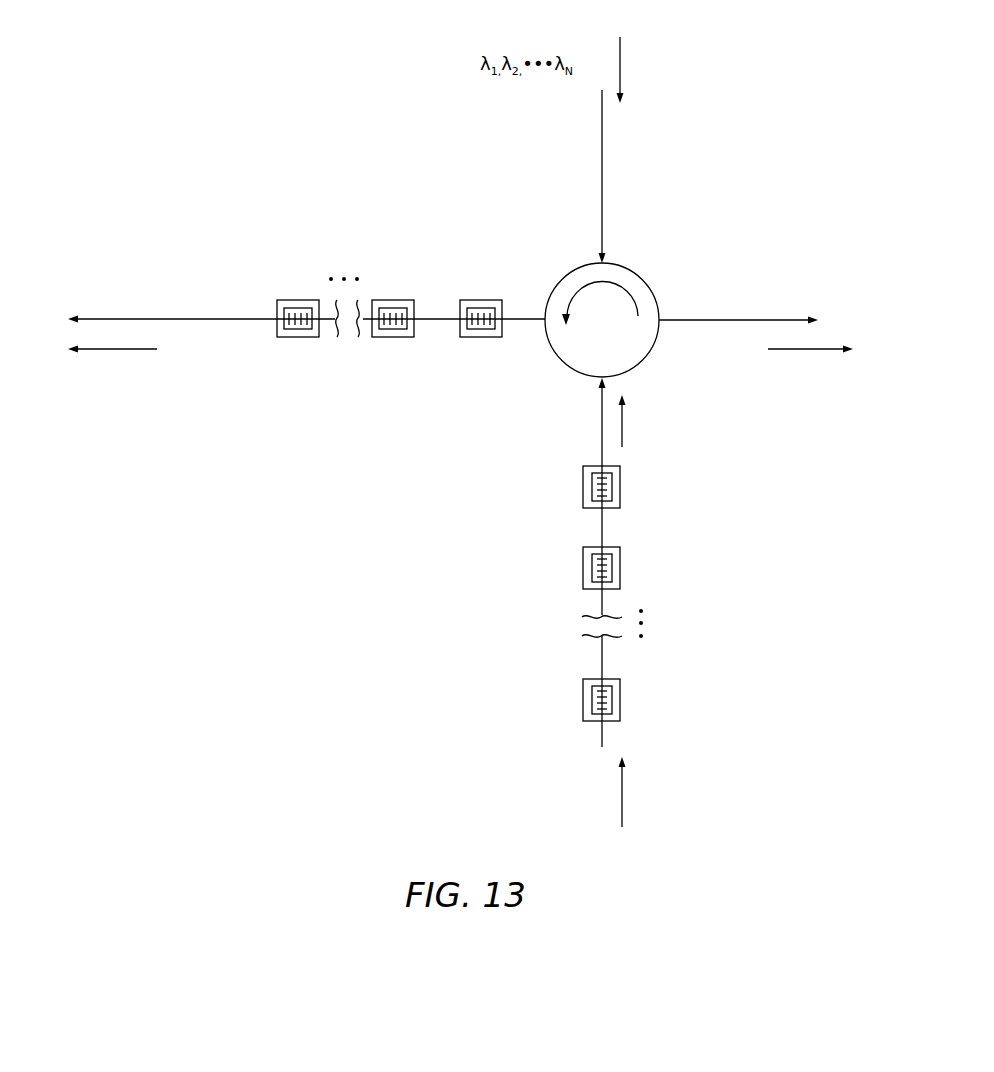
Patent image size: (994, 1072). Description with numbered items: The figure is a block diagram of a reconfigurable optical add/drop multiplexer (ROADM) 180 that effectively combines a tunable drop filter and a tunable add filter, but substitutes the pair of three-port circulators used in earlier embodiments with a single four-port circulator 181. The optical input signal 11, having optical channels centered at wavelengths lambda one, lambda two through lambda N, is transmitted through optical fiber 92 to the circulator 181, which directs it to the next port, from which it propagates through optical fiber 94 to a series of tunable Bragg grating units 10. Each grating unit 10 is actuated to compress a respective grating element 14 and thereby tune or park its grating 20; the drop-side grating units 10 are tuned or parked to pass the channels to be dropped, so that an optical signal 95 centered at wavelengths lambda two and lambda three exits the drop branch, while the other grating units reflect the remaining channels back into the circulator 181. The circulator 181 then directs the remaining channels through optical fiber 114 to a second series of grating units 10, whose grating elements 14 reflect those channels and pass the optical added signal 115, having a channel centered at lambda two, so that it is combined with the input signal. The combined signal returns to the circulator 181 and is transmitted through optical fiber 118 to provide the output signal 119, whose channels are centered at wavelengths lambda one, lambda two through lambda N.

The tunable Bragg grating unit 10 is at (298, 347).
The optical input signal 11 is at (622, 68).
The grating element 14 is at (284, 312).
The grating 20 is at (292, 324).
The optical fiber 92 is at (600, 170).
The optical fiber 94 is at (520, 317).
The optical signal 95 is at (112, 352).
The optical fiber 114 is at (600, 422).
The optical added signal 115 is at (623, 786).
The optical fiber 118 is at (695, 323).
The output signal 119 is at (808, 352).
The reconfigurable optical add/drop multiplexer 180 is at (760, 100).
The 4-port circulator 181 is at (629, 265).